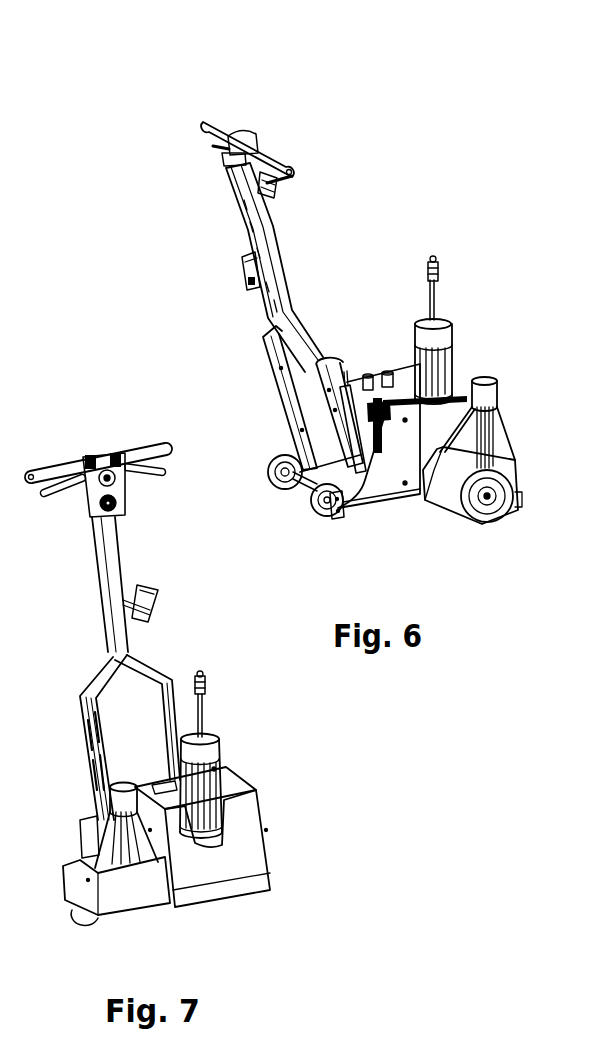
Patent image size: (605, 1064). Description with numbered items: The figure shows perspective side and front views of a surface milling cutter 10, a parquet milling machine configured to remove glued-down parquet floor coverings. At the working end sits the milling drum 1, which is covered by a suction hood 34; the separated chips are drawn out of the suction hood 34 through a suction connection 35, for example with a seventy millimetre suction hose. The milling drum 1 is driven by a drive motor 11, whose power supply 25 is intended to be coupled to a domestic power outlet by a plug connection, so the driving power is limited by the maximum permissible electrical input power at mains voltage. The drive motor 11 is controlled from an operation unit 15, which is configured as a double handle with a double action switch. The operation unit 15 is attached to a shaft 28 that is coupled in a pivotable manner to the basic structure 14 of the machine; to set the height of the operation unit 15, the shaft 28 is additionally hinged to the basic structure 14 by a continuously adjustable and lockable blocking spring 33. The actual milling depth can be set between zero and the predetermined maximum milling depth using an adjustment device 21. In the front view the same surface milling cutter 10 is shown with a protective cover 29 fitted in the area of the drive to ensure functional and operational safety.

In FIG. 6, the surface milling cutter 10 is at (491, 133).
In FIG. 6, the operation unit 15 is at (281, 134).
In FIG. 7, the operation unit 15 is at (149, 427).
In FIG. 6, the shaft 28 is at (278, 259).
In FIG. 6, the adjustment device 21 is at (403, 390).
In FIG. 6, the power supply 25 is at (437, 282).
In FIG. 7, the power supply 25 is at (205, 708).
In FIG. 6, the drive motor 11 is at (450, 352).
In FIG. 6, the suction connection 35 is at (487, 381).
In FIG. 6, the suction hood 34 is at (507, 422).
In FIG. 6, the milling drum 1 is at (490, 528).
In FIG. 6, the basic structure 14 is at (392, 495).
In FIG. 6, the blocking spring 33 is at (325, 502).
In FIG. 7, the protective cover 29 is at (237, 785).